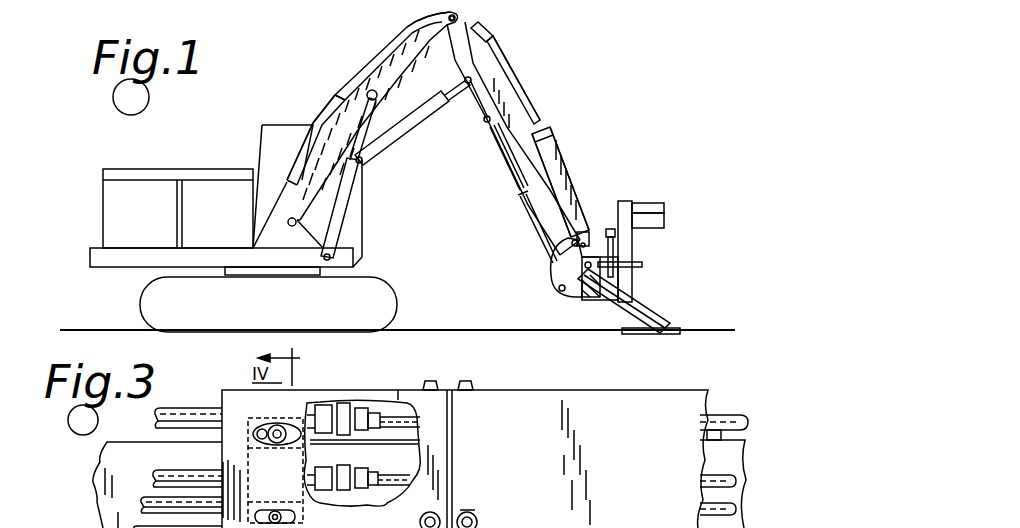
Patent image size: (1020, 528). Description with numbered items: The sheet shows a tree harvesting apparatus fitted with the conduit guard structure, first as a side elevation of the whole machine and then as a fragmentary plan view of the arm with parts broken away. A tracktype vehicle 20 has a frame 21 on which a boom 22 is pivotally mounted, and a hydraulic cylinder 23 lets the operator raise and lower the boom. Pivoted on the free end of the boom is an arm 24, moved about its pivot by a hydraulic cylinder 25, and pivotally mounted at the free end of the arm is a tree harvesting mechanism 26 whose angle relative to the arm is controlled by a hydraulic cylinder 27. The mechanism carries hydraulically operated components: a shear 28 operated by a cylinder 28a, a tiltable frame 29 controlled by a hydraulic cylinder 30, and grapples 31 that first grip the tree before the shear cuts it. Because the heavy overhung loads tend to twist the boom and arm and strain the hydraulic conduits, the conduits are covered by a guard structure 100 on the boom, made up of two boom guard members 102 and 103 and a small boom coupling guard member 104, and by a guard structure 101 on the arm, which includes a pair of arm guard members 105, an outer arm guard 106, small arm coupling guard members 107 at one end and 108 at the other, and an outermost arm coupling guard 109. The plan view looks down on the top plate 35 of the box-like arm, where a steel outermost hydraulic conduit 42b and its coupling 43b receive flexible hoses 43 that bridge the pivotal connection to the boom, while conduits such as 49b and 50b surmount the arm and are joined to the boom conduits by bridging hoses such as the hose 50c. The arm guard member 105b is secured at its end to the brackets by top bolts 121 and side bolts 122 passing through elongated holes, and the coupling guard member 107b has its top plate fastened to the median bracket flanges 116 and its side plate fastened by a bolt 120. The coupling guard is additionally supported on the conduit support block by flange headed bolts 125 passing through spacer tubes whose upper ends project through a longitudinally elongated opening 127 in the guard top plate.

In FIG. 1, the tracktype vehicle 20 is at (112, 280).
In FIG. 1, the frame 21 is at (365, 253).
In FIG. 1, the boom 22 is at (374, 116).
In FIG. 1, the hydraulic cylinder 23 is at (358, 205).
In FIG. 1, the arm 24 is at (458, 16).
In FIG. 1, the hydraulic cylinder 25 is at (400, 135).
In FIG. 1, the tree harvesting mechanism 26 is at (648, 275).
In FIG. 1, the hydraulic cylinder 27 is at (507, 185).
In FIG. 1, the shear 28 is at (668, 325).
In FIG. 1, the cylinder 28a is at (605, 300).
In FIG. 1, the tiltable frame 29 is at (618, 212).
In FIG. 1, the hydraulic cylinder 30 is at (605, 245).
In FIG. 1, the grapples 31 is at (645, 203).
In FIG. 1, the guard structure 100 is at (333, 68).
In FIG. 1, the guard structure 101 is at (545, 100).
In FIG. 1, the boom guard member 102 is at (320, 117).
In FIG. 1, the boom guard member 103 is at (368, 46).
In FIG. 1, the boom coupling guard member 104 is at (408, 27).
In FIG. 1, the arm guard members 105 is at (520, 62).
In FIG. 1, the outer arm guard 106 is at (557, 157).
In FIG. 1, the arm coupling guard members 107 is at (482, 31).
In FIG. 1, the arm coupling guards 108 is at (540, 127).
In FIG. 1, the outermost arm coupling guard 109 is at (555, 262).
In FIG. 3, the top plate 35 is at (107, 442).
In FIG. 3, the flexible hoses 43 is at (185, 407).
In FIG. 3, the coupling 43b is at (362, 403).
In FIG. 3, the outermost hydraulic conduit 42b is at (740, 410).
In FIG. 3, the conduit 49b is at (735, 510).
In FIG. 3, the conduit 50b is at (735, 485).
In FIG. 3, the hose 50c is at (380, 517).
In FIG. 3, the arm guard member 105b is at (600, 390).
In FIG. 3, the arm coupling guard member 107b is at (398, 390).
In FIG. 3, the median bracket flanges 116 is at (496, 515).
In FIG. 3, the bolt 120 is at (438, 383).
In FIG. 3, the top bolts 121 is at (467, 520).
In FIG. 3, the side bolts 122 is at (472, 385).
In FIG. 3, the flange headed bolts 125 is at (280, 424).
In FIG. 3, the longitudinally elongated opening 127 is at (253, 438).